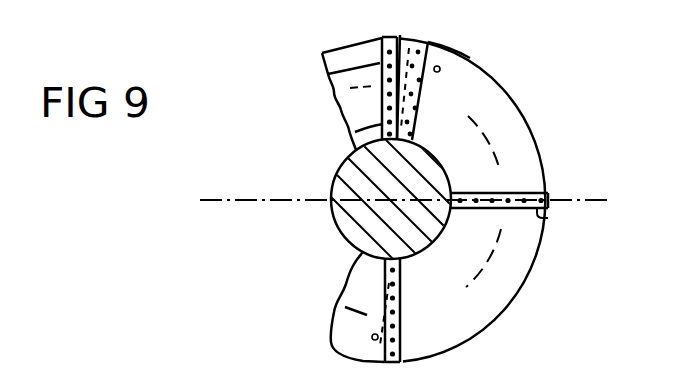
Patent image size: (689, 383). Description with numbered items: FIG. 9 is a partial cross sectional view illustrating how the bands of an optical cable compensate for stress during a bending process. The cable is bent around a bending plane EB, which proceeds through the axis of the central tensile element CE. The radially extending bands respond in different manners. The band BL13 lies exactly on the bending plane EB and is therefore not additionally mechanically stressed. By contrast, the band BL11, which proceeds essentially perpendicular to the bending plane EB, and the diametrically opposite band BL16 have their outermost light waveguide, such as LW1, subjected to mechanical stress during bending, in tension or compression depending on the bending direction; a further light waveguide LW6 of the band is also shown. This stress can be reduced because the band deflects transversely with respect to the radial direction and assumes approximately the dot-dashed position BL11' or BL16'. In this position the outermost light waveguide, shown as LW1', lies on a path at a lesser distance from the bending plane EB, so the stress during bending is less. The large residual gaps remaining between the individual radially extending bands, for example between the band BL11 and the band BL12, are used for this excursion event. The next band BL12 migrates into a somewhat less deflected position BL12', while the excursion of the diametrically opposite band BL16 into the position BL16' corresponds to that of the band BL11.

The band BL11 is at (352, 70).
The deflected position of band BL11 BL11' is at (438, 70).
The band BL12 is at (485, 43).
The deflected position of band BL12 BL12' is at (511, 78).
The band BL13 is at (548, 210).
The band BL16 is at (467, 312).
The deflected position of band BL16 BL16' is at (319, 307).
The outermost light waveguide LW1 is at (316, 58).
The outermost light waveguide in deflected position LW1' is at (321, 101).
The light waveguide LW6 is at (351, 134).
The tensile element CE is at (342, 227).
The bending plane EB is at (568, 198).